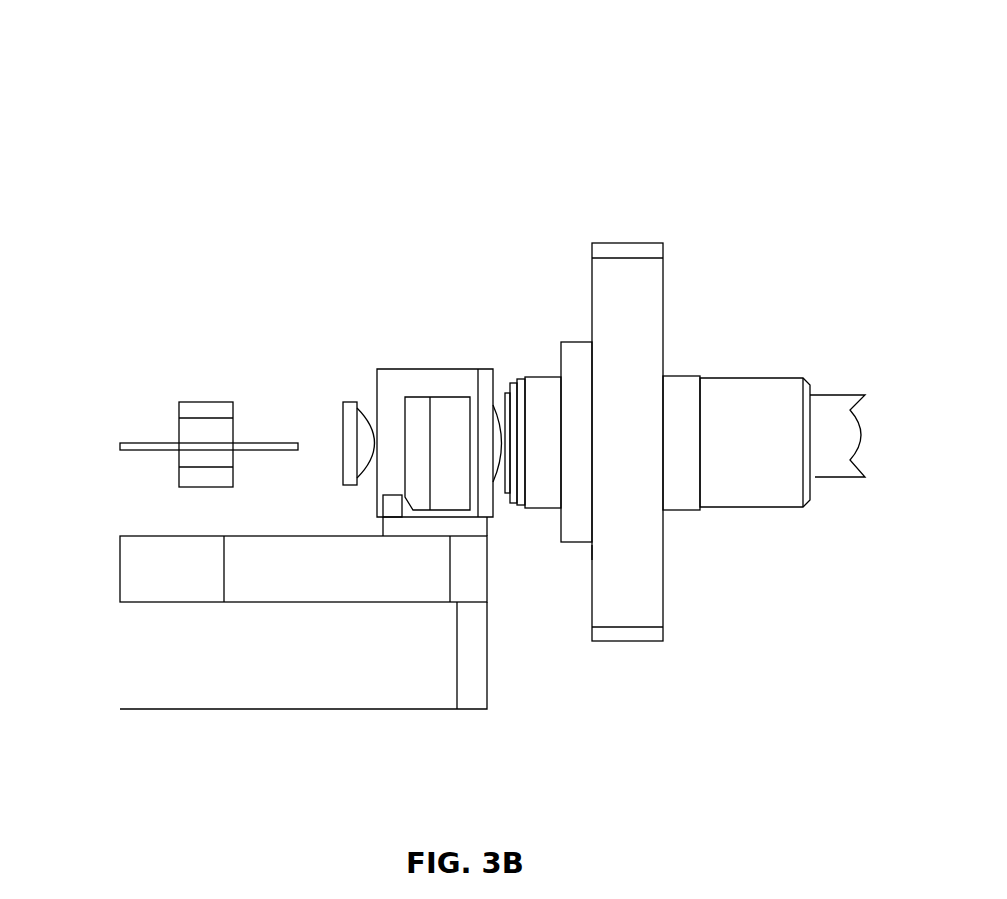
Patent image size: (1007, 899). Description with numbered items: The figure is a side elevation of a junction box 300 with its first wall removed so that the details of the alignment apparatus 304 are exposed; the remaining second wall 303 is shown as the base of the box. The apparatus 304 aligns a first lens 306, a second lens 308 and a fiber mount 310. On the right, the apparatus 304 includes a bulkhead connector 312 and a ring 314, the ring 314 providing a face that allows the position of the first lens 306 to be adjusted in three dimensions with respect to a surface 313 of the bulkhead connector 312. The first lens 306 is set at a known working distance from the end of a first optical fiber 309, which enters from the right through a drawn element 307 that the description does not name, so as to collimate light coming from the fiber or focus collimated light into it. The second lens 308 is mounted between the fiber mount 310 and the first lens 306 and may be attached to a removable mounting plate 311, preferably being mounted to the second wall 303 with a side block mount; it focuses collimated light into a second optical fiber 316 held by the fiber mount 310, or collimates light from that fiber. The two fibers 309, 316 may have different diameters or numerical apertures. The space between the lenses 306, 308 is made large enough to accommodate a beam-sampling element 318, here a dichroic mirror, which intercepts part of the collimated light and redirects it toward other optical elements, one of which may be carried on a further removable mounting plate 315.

The junction box 300 is at (722, 53).
The second wall 303 is at (393, 709).
The apparatus 304 is at (183, 134).
The first lens 306 is at (507, 377).
The motor shaft 307 is at (752, 378).
The second lens 308 is at (346, 398).
The first optical fiber 309 is at (833, 477).
The fiber mount 310 is at (197, 401).
The removable mounting plate 311 is at (162, 536).
The bulkhead connector 312 is at (618, 242).
The surface 313 is at (592, 560).
The ring 314 is at (568, 347).
The removable mounting plate 315 is at (277, 592).
The second optical fiber 316 is at (147, 445).
The beam-sampling element 318 is at (426, 363).